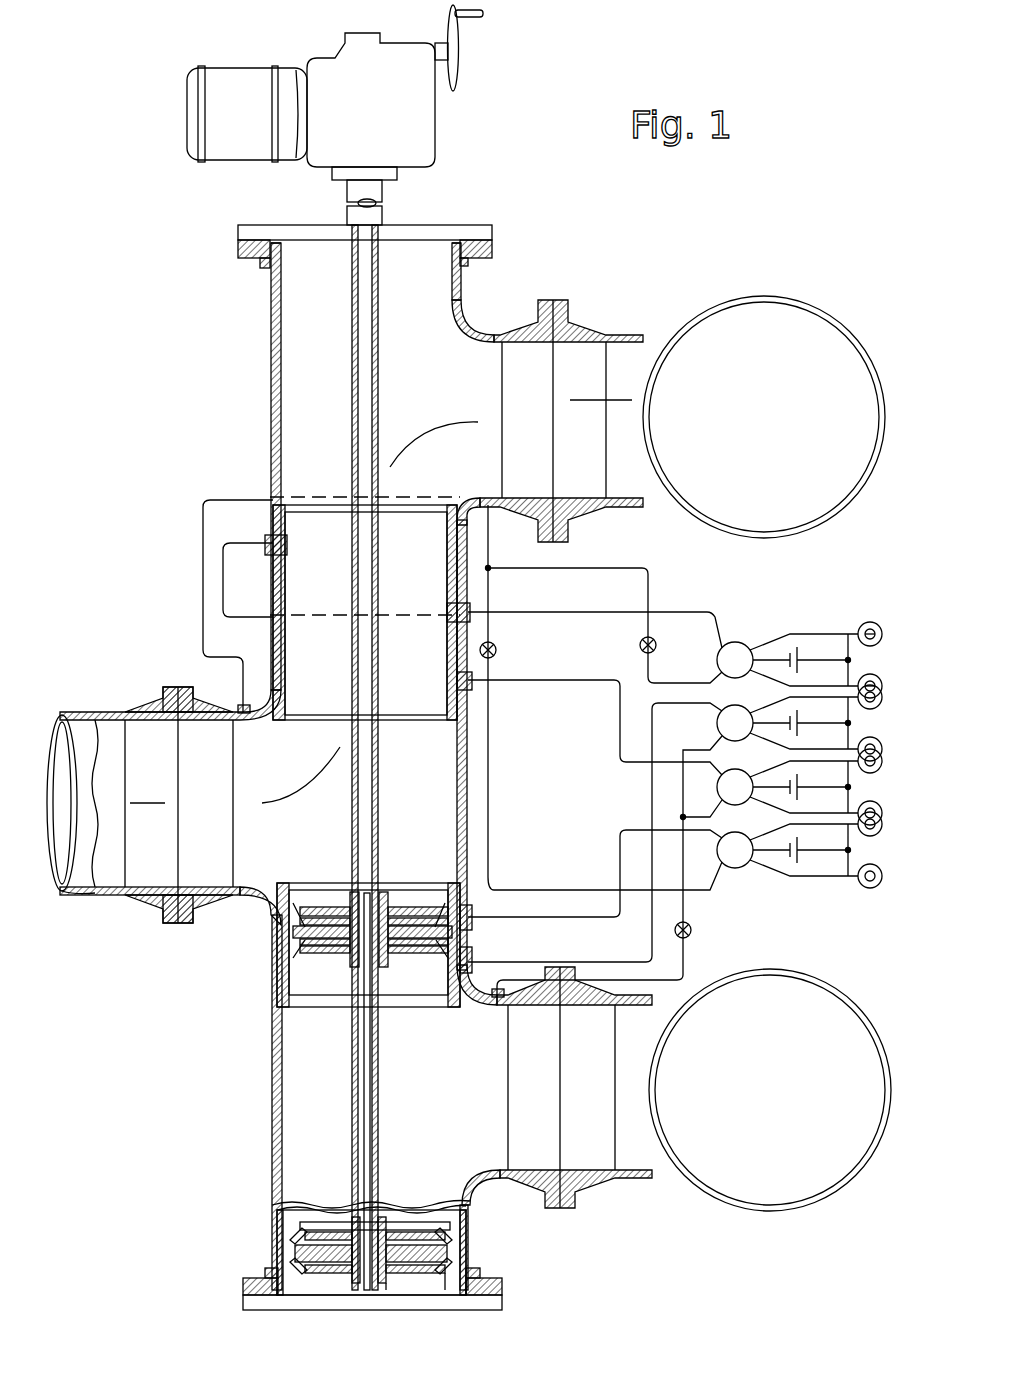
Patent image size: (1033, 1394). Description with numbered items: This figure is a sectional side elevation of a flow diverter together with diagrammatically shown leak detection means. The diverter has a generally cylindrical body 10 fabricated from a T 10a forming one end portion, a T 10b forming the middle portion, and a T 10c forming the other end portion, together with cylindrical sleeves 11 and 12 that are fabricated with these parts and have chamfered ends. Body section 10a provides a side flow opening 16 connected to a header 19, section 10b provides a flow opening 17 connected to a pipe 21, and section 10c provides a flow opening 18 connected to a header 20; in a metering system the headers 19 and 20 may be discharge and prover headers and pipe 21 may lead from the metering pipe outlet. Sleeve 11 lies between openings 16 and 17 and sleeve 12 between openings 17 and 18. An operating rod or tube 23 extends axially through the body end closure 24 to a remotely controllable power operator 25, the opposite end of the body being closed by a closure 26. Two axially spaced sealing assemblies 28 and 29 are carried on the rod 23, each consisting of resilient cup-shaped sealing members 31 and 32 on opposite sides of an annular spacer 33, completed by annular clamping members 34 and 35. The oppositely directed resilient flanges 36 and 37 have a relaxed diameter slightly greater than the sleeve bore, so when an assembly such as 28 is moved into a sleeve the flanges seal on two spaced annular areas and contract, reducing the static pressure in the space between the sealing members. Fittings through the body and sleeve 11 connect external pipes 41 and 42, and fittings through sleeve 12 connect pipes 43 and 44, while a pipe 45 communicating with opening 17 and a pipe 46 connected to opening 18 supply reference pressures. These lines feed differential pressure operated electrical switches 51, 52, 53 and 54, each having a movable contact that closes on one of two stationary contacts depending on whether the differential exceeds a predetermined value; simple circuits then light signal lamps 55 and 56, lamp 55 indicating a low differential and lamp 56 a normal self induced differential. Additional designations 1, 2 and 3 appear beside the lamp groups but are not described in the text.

The indicator lamp group 1 is at (888, 850).
The indicator lamp group 2 is at (885, 755).
The indicator lamp group 3 is at (890, 648).
The body 10 is at (271, 430).
The T 10a is at (468, 316).
The T 10b is at (262, 921).
The T 10c is at (272, 1145).
The cylindrical sleeve 11 is at (418, 505).
The cylindrical sleeve 12 is at (418, 886).
The side flow opening 16 is at (545, 400).
The flow opening 17 is at (262, 801).
The flow opening 18 is at (545, 1098).
The header 19 is at (822, 300).
The header 20 is at (852, 992).
The pipe 21 is at (82, 712).
The operating rod or tube 23 is at (385, 395).
The body end closure 24 is at (432, 224).
The power operator 25 is at (435, 160).
The closure 26 is at (250, 1312).
The sealing assembly 28 is at (328, 890).
The sealing assembly 29 is at (325, 1215).
The cup-shaped sealing member 31 is at (452, 1240).
The cup-shaped sealing member 32 is at (452, 1265).
The annular spacer 33 is at (295, 1253).
The annular clamping member 34 is at (405, 1228).
The annular clamping member 35 is at (395, 1288).
The resilient flange 36 is at (450, 1226).
The resilient flange 37 is at (450, 1283).
The external pipe 41 is at (553, 612).
The external pipe 42 is at (576, 682).
The external pipe 43 is at (626, 830).
The external pipe 44 is at (586, 962).
The pipe 45 is at (203, 552).
The pipe 46 is at (700, 964).
The differential pressure operated electrical switch 51 is at (738, 647).
The differential pressure operated electrical switch 52 is at (743, 774).
The differential pressure operated electrical switch 53 is at (743, 711).
The differential pressure operated electrical switch 54 is at (743, 838).
The signal lamp 55 is at (876, 622).
The signal lamp 56 is at (882, 690).